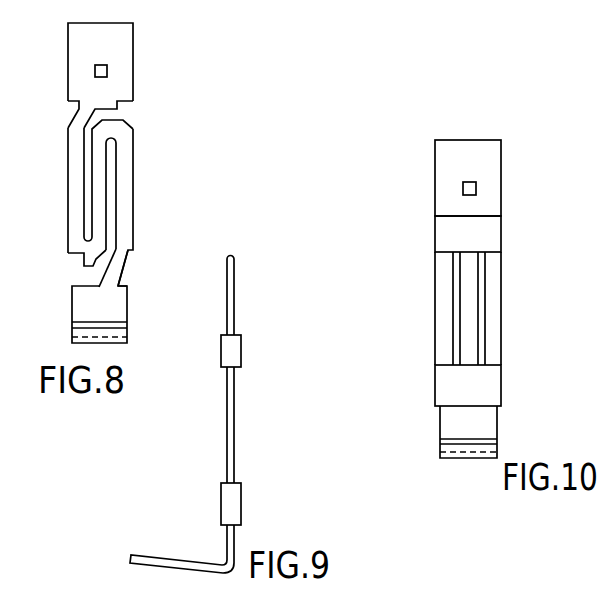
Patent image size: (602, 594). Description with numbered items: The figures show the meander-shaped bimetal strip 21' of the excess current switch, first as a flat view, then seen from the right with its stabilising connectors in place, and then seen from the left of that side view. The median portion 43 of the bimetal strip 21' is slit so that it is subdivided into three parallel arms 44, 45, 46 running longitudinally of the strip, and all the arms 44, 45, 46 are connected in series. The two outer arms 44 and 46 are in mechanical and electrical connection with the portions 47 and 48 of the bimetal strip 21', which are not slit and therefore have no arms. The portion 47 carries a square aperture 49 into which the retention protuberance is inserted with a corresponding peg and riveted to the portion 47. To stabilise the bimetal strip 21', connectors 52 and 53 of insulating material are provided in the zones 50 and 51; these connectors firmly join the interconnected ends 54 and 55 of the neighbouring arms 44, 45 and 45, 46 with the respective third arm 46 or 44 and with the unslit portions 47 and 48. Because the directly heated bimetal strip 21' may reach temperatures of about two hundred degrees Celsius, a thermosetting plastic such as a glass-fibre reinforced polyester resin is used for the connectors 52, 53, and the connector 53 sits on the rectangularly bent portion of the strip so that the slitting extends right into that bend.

In FIG. 8, the bimetal strip 21' is at (112, 183).
In FIG. 9, the bimetal strip 21' is at (209, 415).
In FIG. 10, the bimetal strip 21' is at (447, 298).
In FIG. 8, the median portion 43 is at (137, 183).
In FIG. 8, the arm 44 is at (67, 186).
In FIG. 10, the arm 44 is at (448, 303).
In FIG. 8, the arm 45 is at (100, 213).
In FIG. 10, the arm 45 is at (472, 287).
In FIG. 8, the arm 46 is at (125, 232).
In FIG. 10, the arm 46 is at (490, 325).
In FIG. 8, the portion 47 is at (112, 39).
In FIG. 10, the portion 47 is at (485, 158).
In FIG. 8, the portion 48 is at (103, 306).
In FIG. 10, the portion 48 is at (473, 431).
In FIG. 8, the square aperture 49 is at (108, 71).
In FIG. 10, the square aperture 49 is at (478, 190).
In FIG. 8, the zone 50 is at (117, 115).
In FIG. 8, the zone 51 is at (90, 278).
In FIG. 9, the connector 52 is at (234, 348).
In FIG. 10, the connector 52 is at (470, 236).
In FIG. 9, the connector 53 is at (234, 503).
In FIG. 10, the connector 53 is at (477, 386).
In FIG. 8, the interconnected end 54 is at (88, 250).
In FIG. 8, the interconnected end 55 is at (113, 127).